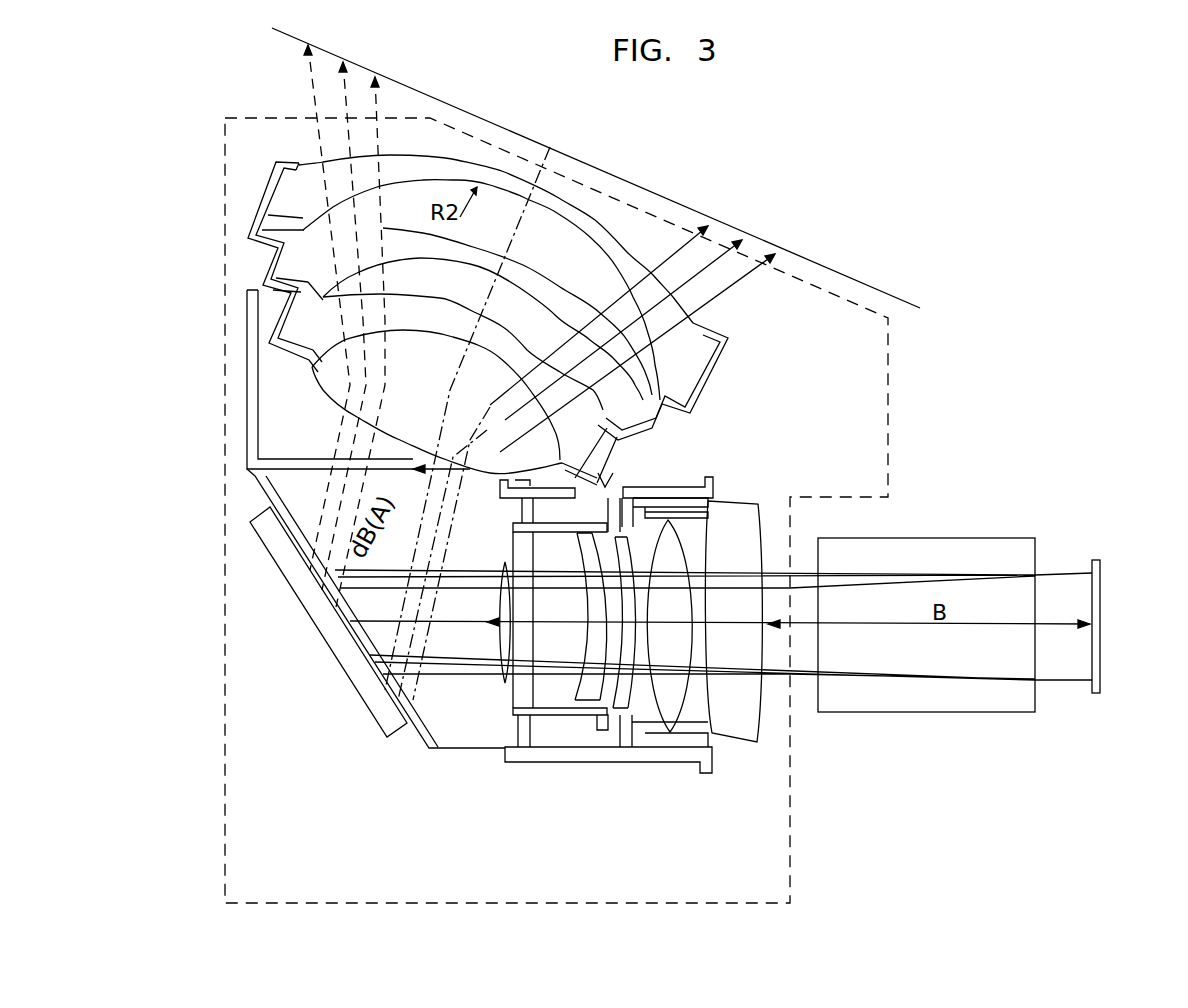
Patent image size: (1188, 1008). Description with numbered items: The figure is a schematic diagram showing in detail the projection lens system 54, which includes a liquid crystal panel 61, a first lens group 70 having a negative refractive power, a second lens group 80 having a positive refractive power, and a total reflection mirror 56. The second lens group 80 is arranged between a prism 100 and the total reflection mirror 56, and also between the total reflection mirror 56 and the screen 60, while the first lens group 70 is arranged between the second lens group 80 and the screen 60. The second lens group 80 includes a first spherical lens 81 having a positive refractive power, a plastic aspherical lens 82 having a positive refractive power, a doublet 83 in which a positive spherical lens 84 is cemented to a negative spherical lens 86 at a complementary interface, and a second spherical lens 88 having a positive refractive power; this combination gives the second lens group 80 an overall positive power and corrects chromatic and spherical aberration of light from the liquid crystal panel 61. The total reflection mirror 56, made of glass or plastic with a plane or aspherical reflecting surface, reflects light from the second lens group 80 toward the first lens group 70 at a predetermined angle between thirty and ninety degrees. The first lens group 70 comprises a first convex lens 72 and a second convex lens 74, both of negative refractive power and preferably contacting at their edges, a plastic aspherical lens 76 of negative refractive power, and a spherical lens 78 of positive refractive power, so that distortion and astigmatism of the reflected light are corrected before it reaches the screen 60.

The projection lens system 54 is at (888, 410).
The total reflection mirror 56 is at (332, 637).
The screen 60 is at (813, 262).
The liquid crystal panel 61 is at (1100, 590).
The first lens group 70 is at (558, 320).
The first convex lens 72 is at (650, 317).
The second convex lens 74 is at (640, 373).
The plastic aspherical lens 76 is at (577, 413).
The spherical lens 78 is at (540, 462).
The second lens group 80 is at (601, 687).
The first spherical lens 81 is at (507, 670).
The plastic aspherical lens 82 is at (587, 698).
The doublet 83 is at (652, 688).
The positive spherical lens 84 is at (632, 702).
The negative spherical lens 86 is at (669, 732).
The second spherical lens 88 is at (734, 656).
The prism 100 is at (925, 700).